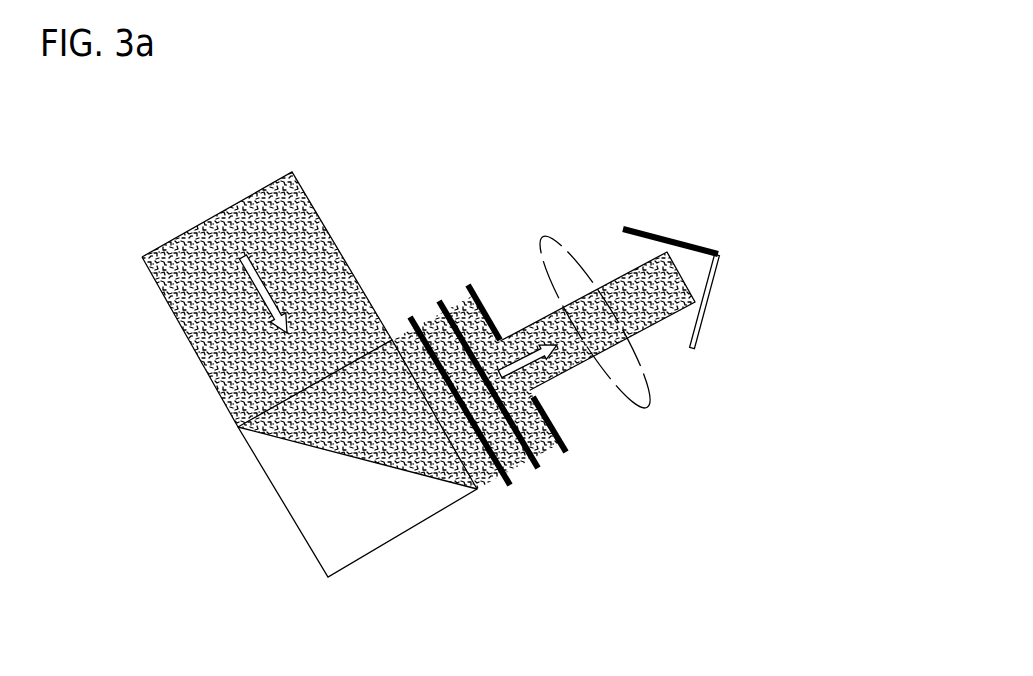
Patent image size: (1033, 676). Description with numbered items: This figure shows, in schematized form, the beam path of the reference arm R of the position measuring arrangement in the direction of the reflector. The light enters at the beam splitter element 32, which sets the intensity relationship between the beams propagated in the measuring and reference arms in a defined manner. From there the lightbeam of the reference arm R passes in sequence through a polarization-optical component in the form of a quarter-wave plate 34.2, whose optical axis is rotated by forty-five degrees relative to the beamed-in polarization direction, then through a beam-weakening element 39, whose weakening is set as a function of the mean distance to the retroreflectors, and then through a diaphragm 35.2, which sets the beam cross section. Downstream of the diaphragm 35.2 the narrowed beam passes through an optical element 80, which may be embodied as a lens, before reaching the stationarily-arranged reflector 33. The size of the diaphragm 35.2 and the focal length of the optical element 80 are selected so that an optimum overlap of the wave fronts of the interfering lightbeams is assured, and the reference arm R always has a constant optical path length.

The reference arm R is at (186, 426).
The beam splitter element 32 is at (297, 497).
The λ/4 plate 34.2 is at (508, 486).
The beam-weakening element 39 is at (540, 468).
The diaphragm 35.2 is at (565, 453).
The optical element 80 is at (636, 392).
The reflector 33 is at (697, 247).